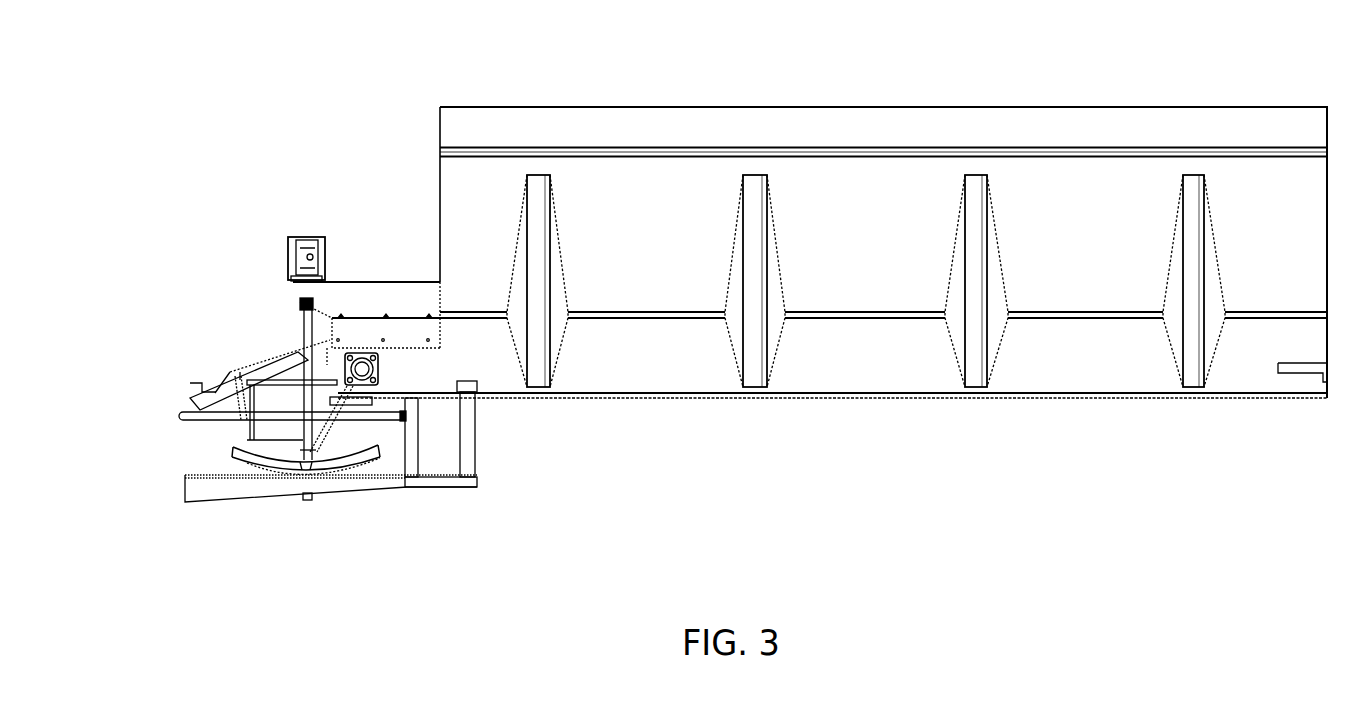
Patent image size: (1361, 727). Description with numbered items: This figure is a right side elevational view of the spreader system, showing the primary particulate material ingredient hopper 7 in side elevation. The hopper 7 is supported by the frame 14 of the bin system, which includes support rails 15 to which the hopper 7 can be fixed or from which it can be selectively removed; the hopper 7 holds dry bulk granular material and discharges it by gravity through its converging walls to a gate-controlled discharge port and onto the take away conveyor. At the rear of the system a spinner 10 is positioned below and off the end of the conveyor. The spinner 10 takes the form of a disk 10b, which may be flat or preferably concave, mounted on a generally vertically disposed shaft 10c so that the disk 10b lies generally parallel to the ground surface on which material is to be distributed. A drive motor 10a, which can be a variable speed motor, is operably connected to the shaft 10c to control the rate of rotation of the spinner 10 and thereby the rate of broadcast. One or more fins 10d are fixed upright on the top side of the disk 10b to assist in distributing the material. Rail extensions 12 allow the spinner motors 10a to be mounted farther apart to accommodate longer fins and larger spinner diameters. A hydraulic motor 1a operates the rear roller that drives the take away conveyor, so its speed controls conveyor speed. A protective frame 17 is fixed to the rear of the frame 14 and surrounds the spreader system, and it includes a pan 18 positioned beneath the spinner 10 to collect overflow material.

The particulate material ingredient hopper 7 is at (672, 110).
The frame 14 is at (655, 362).
The support rails 15 is at (558, 288).
The drive motor 10a is at (303, 238).
The rail extensions 12 is at (350, 303).
The shaft 10c is at (303, 323).
The spinner 10 is at (200, 358).
The protective frame 17 is at (203, 408).
The hydraulic motor 1a is at (378, 372).
The fin 10d is at (238, 455).
The disk 10b is at (325, 470).
The pan 18 is at (245, 500).